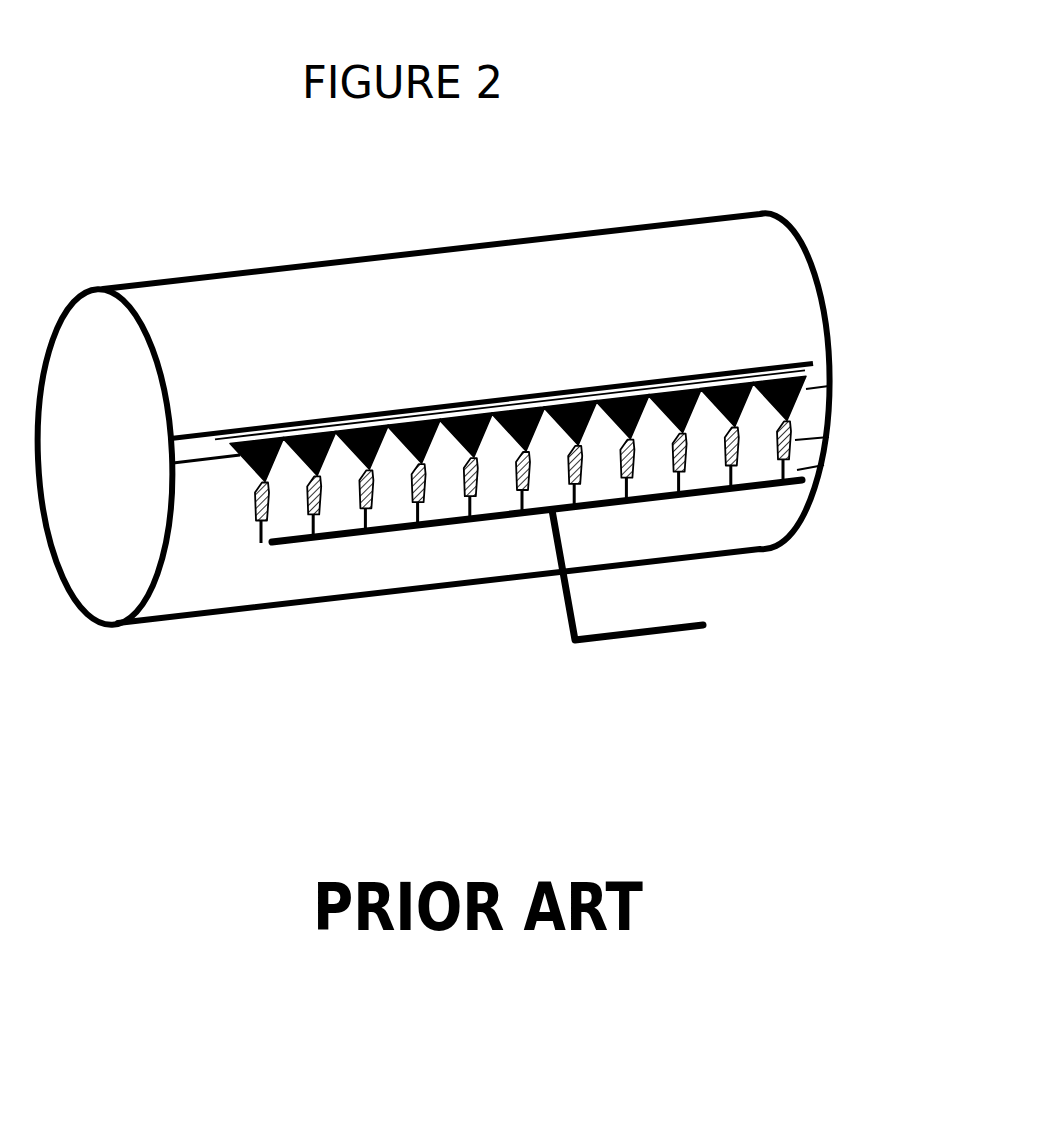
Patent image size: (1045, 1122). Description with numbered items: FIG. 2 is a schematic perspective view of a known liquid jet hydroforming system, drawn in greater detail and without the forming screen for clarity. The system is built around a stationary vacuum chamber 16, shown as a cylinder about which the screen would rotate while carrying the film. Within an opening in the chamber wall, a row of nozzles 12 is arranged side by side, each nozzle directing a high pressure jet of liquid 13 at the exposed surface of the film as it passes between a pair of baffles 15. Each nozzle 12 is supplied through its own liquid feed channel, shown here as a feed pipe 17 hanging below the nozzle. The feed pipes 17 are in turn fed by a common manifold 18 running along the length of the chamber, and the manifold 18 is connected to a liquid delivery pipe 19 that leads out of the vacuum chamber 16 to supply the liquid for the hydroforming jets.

The liquid nozzle 12 is at (832, 429).
The high pressure jet of liquid 13 is at (832, 391).
The baffles 15 is at (187, 468).
The stationary vacuum chamber 16 is at (218, 615).
The feed pipe 17 is at (833, 461).
The manifold 18 is at (365, 537).
The liquid delivery pipe 19 is at (637, 641).